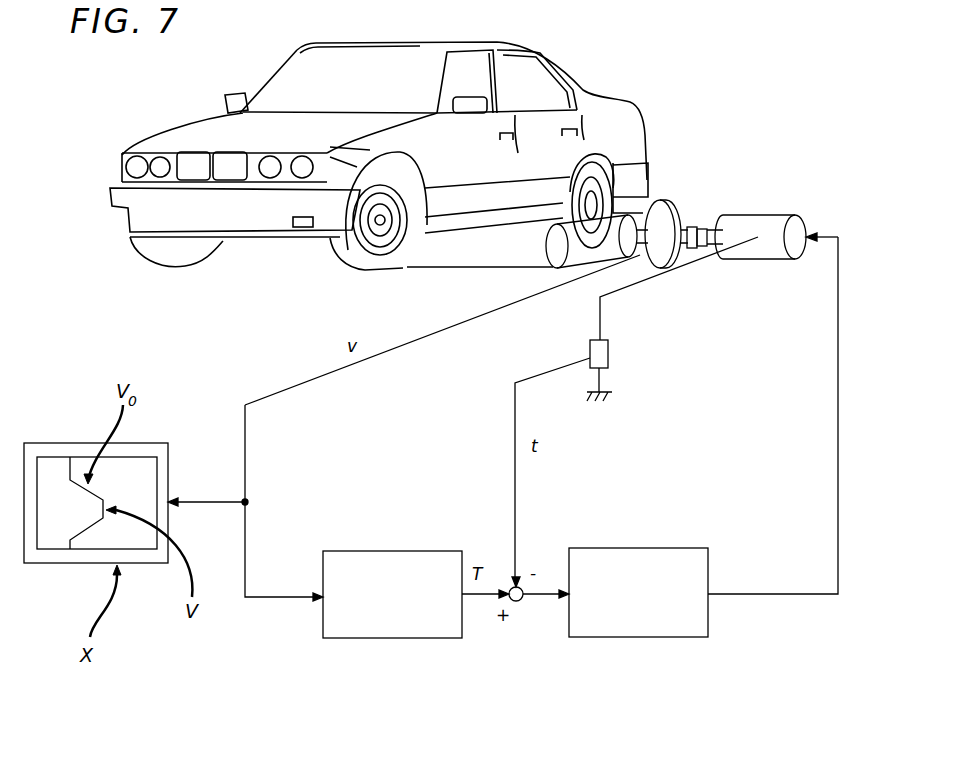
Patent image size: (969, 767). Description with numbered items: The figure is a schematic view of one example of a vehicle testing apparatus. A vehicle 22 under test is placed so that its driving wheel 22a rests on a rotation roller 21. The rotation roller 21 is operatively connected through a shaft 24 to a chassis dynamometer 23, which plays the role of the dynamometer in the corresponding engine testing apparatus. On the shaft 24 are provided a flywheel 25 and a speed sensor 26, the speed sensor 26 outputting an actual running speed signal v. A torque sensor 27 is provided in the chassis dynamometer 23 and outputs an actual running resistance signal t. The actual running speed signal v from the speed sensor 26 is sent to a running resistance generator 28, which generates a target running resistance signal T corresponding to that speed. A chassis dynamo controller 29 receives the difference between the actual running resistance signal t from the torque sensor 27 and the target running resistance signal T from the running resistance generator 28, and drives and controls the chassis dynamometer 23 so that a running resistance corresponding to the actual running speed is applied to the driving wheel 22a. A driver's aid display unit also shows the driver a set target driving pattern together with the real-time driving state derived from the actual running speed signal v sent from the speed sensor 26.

The rotation roller 21 is at (593, 173).
The vehicle 22 is at (407, 43).
The driving wheel 22a is at (617, 220).
The chassis dynamometer 23 is at (777, 218).
The shaft 24 is at (714, 230).
The flywheel 25 is at (657, 200).
The speed sensor 26 is at (697, 227).
The torque sensor 27 is at (608, 355).
The running resistance generator 28 is at (393, 551).
The chassis dynamo controller 29 is at (638, 548).